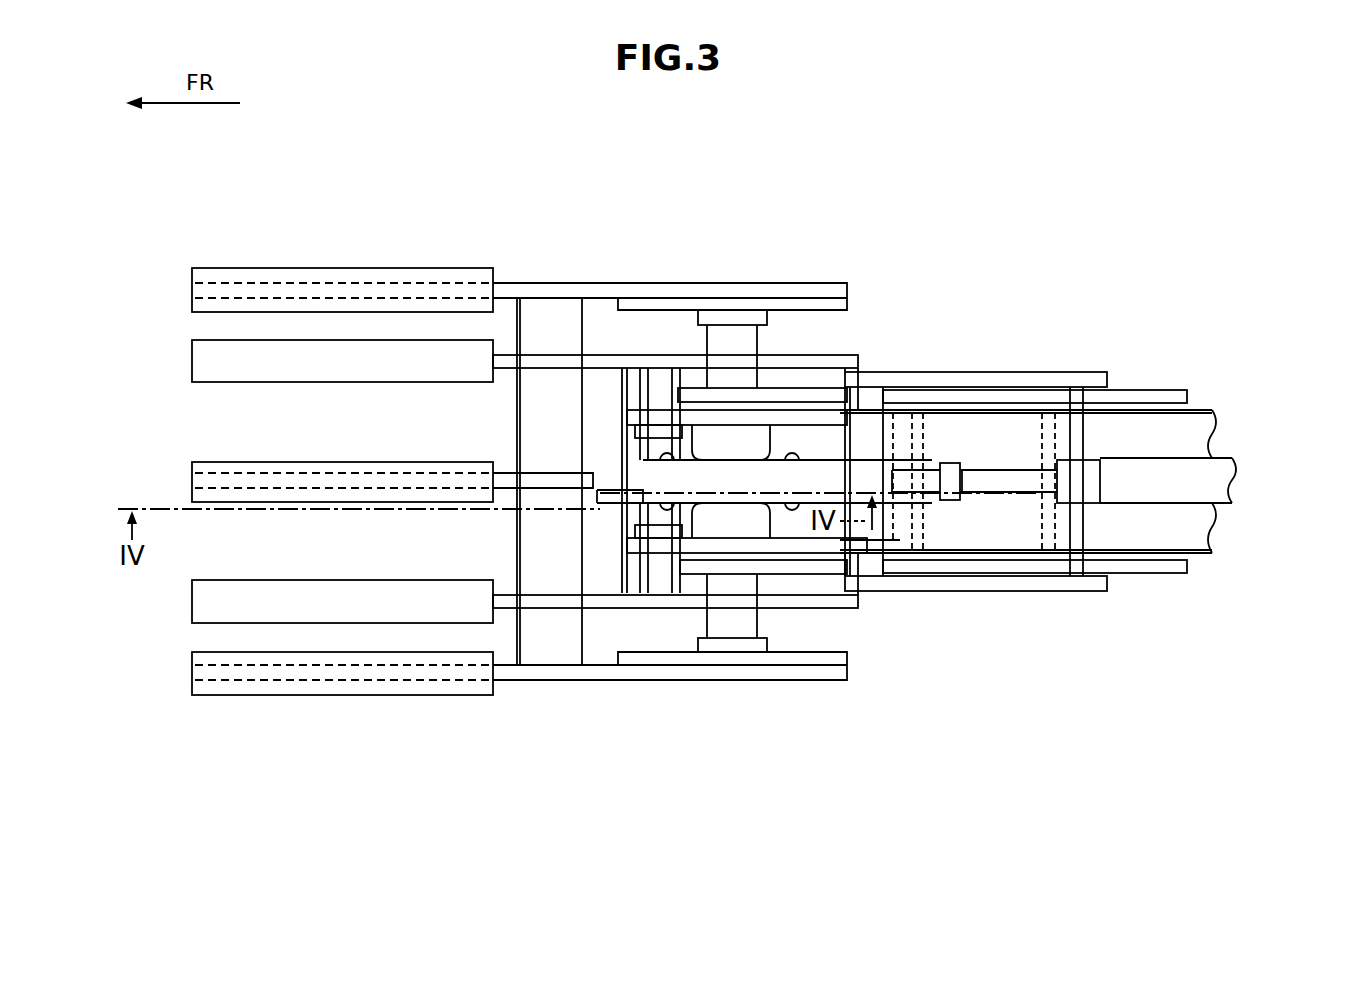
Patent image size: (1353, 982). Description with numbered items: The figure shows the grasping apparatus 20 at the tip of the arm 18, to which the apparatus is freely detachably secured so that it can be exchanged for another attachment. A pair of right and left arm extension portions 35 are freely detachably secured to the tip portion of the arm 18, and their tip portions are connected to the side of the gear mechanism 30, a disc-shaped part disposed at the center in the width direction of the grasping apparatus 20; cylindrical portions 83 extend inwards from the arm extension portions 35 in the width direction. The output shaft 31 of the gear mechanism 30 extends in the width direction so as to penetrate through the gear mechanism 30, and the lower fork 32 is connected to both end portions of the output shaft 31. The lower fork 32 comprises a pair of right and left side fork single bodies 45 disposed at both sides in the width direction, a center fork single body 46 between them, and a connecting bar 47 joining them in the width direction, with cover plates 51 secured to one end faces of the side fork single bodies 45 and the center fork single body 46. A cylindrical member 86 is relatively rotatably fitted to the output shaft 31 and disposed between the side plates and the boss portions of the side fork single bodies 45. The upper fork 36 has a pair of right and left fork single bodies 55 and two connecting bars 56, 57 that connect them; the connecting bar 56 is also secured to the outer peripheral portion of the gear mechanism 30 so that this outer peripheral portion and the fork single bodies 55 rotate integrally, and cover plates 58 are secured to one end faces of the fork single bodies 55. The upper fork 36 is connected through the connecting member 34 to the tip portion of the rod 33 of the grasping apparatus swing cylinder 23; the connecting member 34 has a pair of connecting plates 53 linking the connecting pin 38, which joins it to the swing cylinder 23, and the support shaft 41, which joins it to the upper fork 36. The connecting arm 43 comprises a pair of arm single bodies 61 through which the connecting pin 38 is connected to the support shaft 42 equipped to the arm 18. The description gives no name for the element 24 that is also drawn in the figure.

The arm 18 is at (1197, 430).
The grasping apparatus 20 is at (392, 254).
The grasping apparatus swing cylinder 23 is at (1208, 481).
The piston 24 is at (1185, 530).
The gear mechanism 30 is at (738, 345).
The output shaft 31 is at (758, 600).
The lower fork 32 is at (567, 272).
The rod 33 is at (983, 463).
The connecting member 34 is at (790, 540).
The arm extension portions 35 is at (847, 370).
The upper fork 36 is at (507, 620).
The connecting pin 38 is at (882, 578).
The support shaft 41 is at (690, 600).
The support shaft 42 is at (1076, 592).
The connecting arm 43 is at (1034, 364).
The side fork single bodies 45 is at (518, 283).
The center fork single body 46 is at (572, 560).
The connecting bar 47 is at (530, 287).
The cover plates 51 is at (225, 266).
The connecting plates 53 is at (818, 390).
The fork single bodies 55 is at (608, 430).
The connecting bar 56 is at (633, 450).
The connecting bar 57 is at (600, 600).
The cover plates 58 is at (230, 340).
The arm single bodies 61 is at (988, 372).
The cylindrical portions 83 is at (780, 412).
The cylindrical member 86 is at (747, 440).